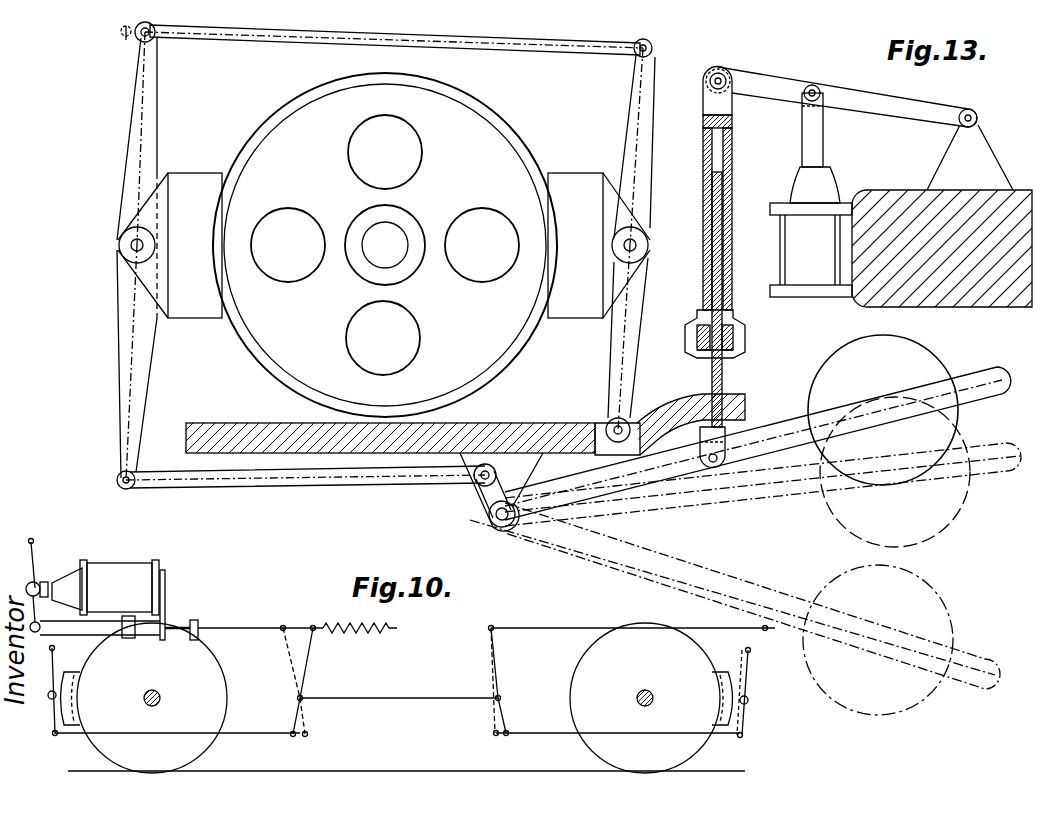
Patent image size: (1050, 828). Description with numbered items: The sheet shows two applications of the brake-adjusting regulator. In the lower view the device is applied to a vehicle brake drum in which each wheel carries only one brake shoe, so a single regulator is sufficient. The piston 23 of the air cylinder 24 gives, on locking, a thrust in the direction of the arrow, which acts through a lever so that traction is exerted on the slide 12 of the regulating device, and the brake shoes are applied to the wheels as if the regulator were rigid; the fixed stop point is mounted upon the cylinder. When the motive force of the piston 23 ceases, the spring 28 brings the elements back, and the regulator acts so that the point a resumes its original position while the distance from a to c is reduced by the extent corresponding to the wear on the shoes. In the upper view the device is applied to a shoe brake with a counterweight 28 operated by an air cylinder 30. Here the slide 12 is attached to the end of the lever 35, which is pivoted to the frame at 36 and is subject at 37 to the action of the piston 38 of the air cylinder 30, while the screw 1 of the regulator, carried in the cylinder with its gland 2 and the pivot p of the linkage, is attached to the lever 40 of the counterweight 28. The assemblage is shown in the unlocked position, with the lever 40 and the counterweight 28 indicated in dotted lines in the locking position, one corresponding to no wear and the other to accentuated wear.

In FIG. 13, the screw 1 is at (716, 243).
In FIG. 13, the stuffing box gland 2 is at (740, 338).
In FIG. 13, the slide 12 is at (733, 206).
In FIG. 10, the slide 12 is at (68, 632).
In FIG. 10, the piston 23 is at (45, 582).
In FIG. 10, the air cylinder 24 is at (115, 575).
In FIG. 13, the spring 28 is at (845, 455).
In FIG. 10, the spring 28 is at (330, 618).
In FIG. 13, the air cylinder 30 is at (812, 285).
In FIG. 13, the lever 35 is at (893, 105).
In FIG. 13, the pivot 36 is at (972, 110).
In FIG. 13, the point of action 37 is at (818, 86).
In FIG. 13, the piston 38 is at (824, 150).
In FIG. 13, the lever 40 is at (678, 470).
In FIG. 10, the point a is at (93, 623).
In FIG. 10, the point c is at (256, 614).
In FIG. 13, the pivot p is at (485, 475).